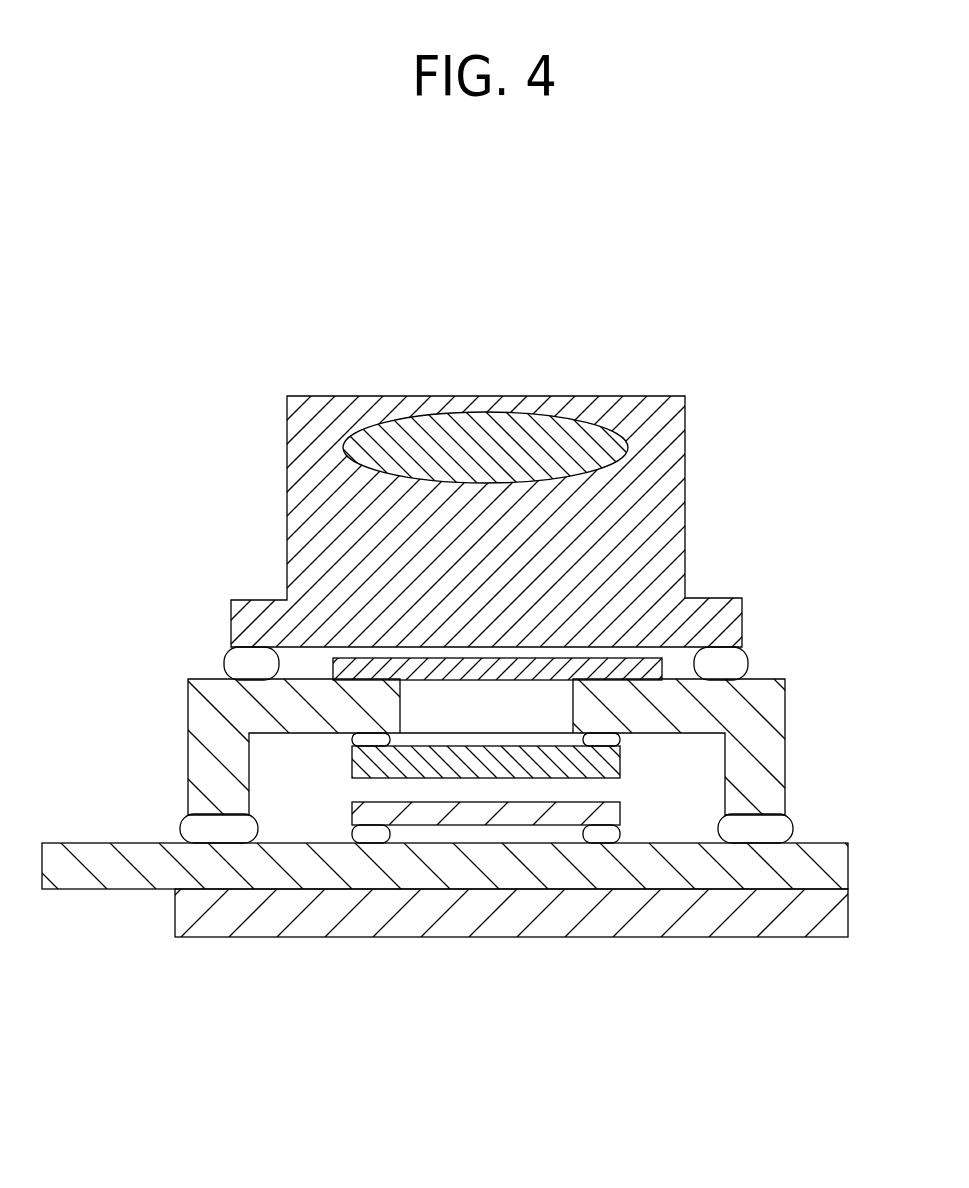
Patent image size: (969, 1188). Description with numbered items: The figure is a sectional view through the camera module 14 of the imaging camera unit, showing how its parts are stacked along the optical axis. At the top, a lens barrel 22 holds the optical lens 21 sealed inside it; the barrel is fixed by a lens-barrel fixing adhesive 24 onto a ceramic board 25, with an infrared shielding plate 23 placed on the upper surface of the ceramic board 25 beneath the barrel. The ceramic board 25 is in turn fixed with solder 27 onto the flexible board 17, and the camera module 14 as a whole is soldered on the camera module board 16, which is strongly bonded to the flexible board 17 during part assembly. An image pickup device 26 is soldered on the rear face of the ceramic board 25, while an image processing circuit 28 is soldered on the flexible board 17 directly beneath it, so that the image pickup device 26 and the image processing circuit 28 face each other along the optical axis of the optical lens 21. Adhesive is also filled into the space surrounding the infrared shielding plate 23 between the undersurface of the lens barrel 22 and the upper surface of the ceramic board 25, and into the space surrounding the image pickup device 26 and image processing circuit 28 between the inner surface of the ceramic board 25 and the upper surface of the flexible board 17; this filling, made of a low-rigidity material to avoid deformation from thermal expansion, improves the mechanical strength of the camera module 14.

The camera module 14 is at (500, 309).
The camera module board 16 is at (580, 908).
The flexible board 17 is at (650, 870).
The optical lens 21 is at (405, 428).
The lens barrel 22 is at (635, 395).
The infrared shielding plate 23 is at (353, 667).
The lens-barrel fixing adhesive 24 is at (227, 658).
The ceramic board 25 is at (763, 690).
The image pickup device 26 is at (352, 760).
The solder 27 is at (178, 830).
The image processing circuit 28 is at (352, 815).